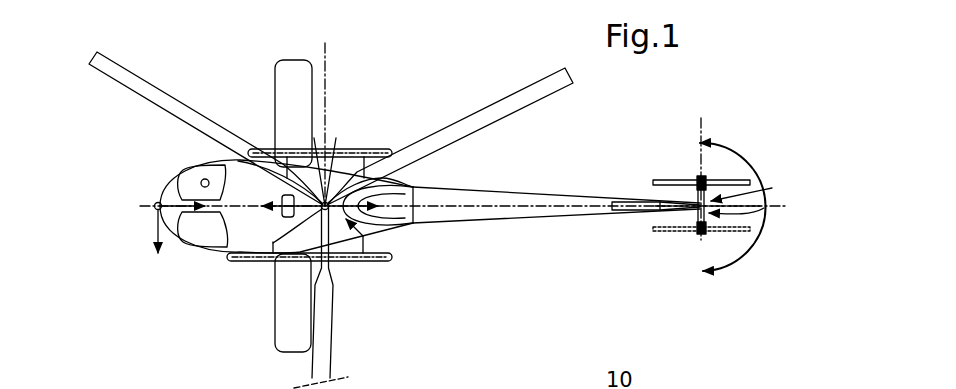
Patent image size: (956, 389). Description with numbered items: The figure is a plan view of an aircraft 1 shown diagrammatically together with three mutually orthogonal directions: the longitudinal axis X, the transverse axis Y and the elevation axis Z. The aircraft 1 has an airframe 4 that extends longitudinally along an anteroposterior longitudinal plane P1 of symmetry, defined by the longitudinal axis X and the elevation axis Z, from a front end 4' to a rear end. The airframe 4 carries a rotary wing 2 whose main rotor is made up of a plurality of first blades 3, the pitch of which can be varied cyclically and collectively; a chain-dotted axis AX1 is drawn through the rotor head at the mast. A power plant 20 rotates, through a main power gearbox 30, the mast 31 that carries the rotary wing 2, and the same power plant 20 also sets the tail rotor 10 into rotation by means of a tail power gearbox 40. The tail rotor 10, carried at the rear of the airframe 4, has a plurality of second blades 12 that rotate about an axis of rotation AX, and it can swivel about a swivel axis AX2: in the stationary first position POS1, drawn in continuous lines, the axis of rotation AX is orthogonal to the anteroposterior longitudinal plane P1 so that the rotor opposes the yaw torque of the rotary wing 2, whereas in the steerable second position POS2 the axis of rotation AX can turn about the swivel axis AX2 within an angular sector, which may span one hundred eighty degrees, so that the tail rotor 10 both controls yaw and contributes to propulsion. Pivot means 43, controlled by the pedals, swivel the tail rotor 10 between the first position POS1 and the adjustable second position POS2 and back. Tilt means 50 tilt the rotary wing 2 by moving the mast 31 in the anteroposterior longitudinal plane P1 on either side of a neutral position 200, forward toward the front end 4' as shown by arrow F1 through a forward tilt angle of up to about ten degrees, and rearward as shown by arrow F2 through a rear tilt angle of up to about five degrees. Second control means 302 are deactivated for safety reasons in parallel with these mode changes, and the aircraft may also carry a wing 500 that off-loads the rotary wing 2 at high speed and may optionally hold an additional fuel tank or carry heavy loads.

The aircraft 1 is at (140, 297).
The rotary wing 2 is at (186, 86).
The first blade 3 is at (512, 96).
The airframe 4 is at (203, 234).
The front end 4' is at (219, 171).
The tail rotor 10 is at (736, 136).
The second blade 12 is at (683, 181).
The power plant 20 is at (385, 187).
The main power gearbox 30 is at (320, 162).
The mast 31 is at (328, 198).
The tail power gearbox 40 is at (763, 212).
The pivot means 43 is at (772, 188).
The tilt means 50 is at (376, 254).
The neutral position 200 is at (268, 262).
The second control means 302 is at (207, 178).
The wing 500 is at (275, 314).
The main rotor axis AX1 is at (326, 64).
The axis of rotation AX is at (700, 127).
The swivel axis AX2 is at (698, 204).
The arrow F1 is at (282, 194).
The arrow F2 is at (380, 237).
The anteroposterior longitudinal plane P1 is at (776, 203).
The stationary first position POS1 is at (723, 176).
The steerable second position POS2 is at (722, 248).
The longitudinal axis X is at (185, 222).
The transverse axis Y is at (146, 236).
The elevation axis Z is at (150, 196).